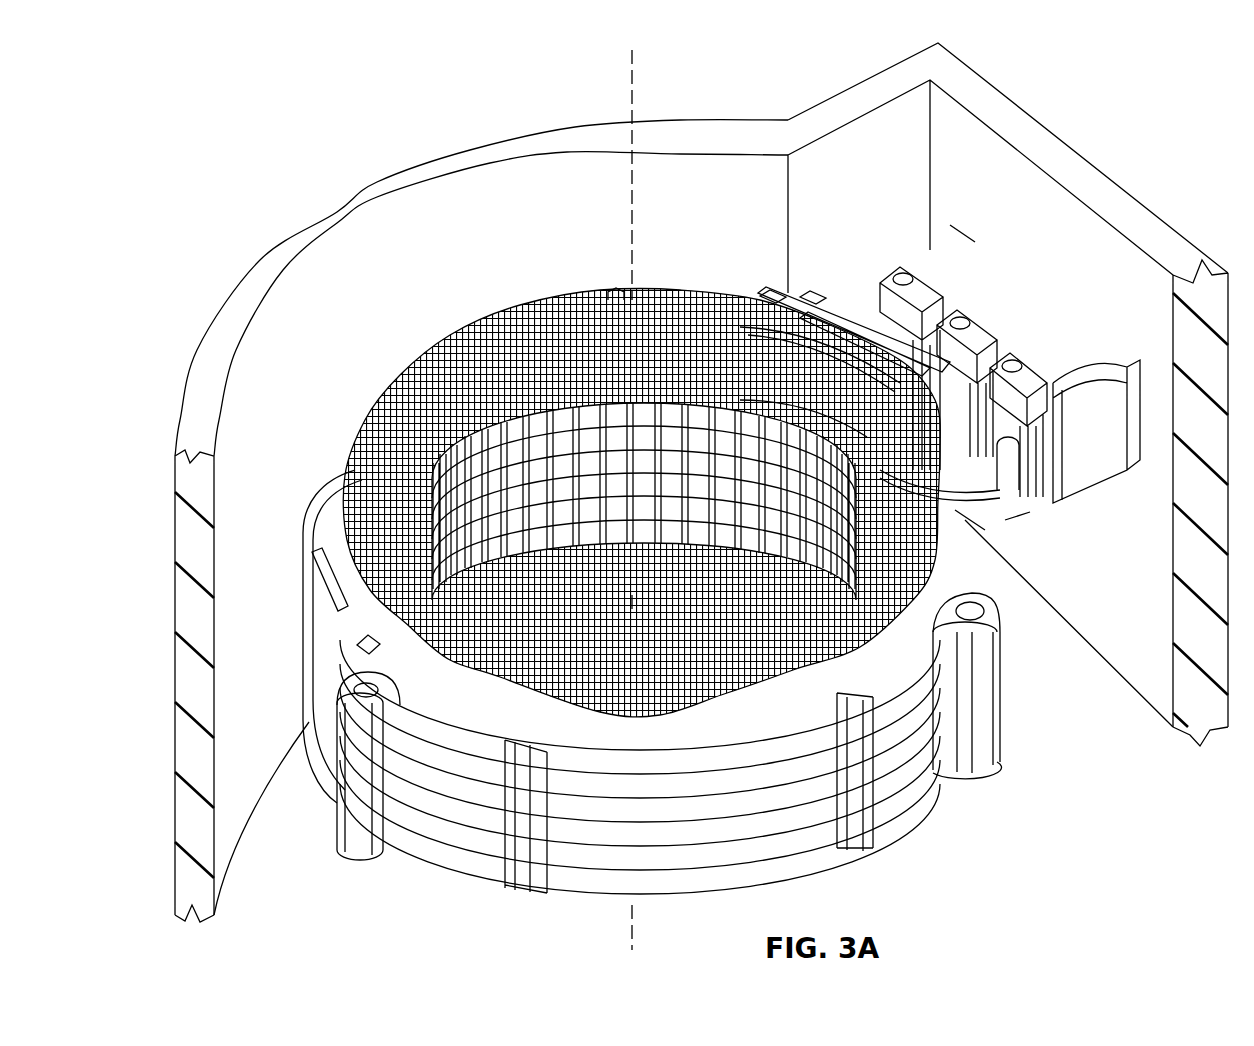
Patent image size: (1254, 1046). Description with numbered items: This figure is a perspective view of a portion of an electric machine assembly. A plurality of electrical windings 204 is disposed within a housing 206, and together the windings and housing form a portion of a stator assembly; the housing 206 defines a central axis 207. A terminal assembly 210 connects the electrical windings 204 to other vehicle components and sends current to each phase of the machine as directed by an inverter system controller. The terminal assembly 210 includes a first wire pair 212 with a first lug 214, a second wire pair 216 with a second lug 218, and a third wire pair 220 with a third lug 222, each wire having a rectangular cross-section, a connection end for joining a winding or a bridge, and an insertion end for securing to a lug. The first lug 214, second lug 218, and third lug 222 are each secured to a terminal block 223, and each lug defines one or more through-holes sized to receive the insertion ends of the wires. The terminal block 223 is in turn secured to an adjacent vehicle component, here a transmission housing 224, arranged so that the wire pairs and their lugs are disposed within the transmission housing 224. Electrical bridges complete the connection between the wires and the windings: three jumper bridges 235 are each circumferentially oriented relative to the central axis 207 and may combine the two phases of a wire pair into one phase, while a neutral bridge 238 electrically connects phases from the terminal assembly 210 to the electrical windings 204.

The electrical windings 204 is at (402, 360).
The housing 206 is at (292, 548).
The central axis 207 is at (630, 95).
The terminal assembly 210 is at (880, 200).
The first wire pair 212 is at (867, 307).
The first lug 214 is at (890, 263).
The second wire pair 216 is at (987, 423).
The second lug 218 is at (973, 317).
The third wire pair 220 is at (1013, 530).
The third lug 222 is at (1028, 350).
The terminal block 223 is at (960, 230).
The transmission housing 224 is at (985, 75).
The jumper bridges 235 is at (760, 292).
The neutral bridge 238 is at (613, 297).